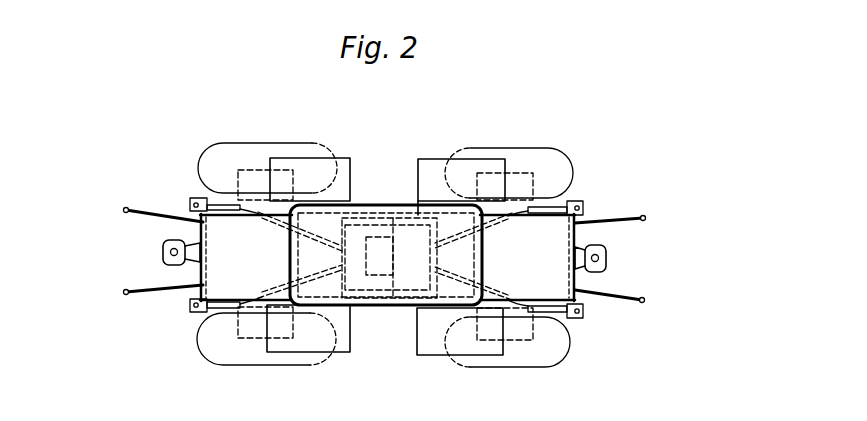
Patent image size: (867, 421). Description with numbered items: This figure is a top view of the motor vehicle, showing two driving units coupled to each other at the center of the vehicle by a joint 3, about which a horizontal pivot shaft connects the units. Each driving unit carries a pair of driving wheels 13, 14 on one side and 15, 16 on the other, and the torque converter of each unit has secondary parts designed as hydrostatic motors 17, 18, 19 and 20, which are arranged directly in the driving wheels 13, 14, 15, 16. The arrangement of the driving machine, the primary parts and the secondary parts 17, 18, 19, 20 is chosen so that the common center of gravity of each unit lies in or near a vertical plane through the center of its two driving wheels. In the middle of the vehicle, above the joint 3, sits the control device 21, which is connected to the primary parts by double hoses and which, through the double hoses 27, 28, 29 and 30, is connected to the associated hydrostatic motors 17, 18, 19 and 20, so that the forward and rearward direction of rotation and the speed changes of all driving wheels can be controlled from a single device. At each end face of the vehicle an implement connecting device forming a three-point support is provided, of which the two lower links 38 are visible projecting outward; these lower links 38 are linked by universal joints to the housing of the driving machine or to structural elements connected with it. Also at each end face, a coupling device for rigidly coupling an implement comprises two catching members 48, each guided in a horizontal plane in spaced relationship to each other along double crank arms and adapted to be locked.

The joint 3 is at (378, 272).
The driving wheel 13 is at (210, 161).
The driving wheel 14 is at (215, 353).
The driving wheel 15 is at (560, 165).
The driving wheel 16 is at (553, 355).
The hydrostatic motor 17 is at (252, 178).
The hydrostatic motor 18 is at (283, 330).
The hydrostatic motor 19 is at (522, 180).
The hydrostatic motor 20 is at (520, 330).
The control device 21 is at (353, 235).
The double hose 27 is at (290, 226).
The double hose 28 is at (302, 280).
The double hose 29 is at (470, 230).
The double hose 30 is at (476, 290).
The lower link 38 is at (133, 215).
The catching member 48 is at (200, 200).